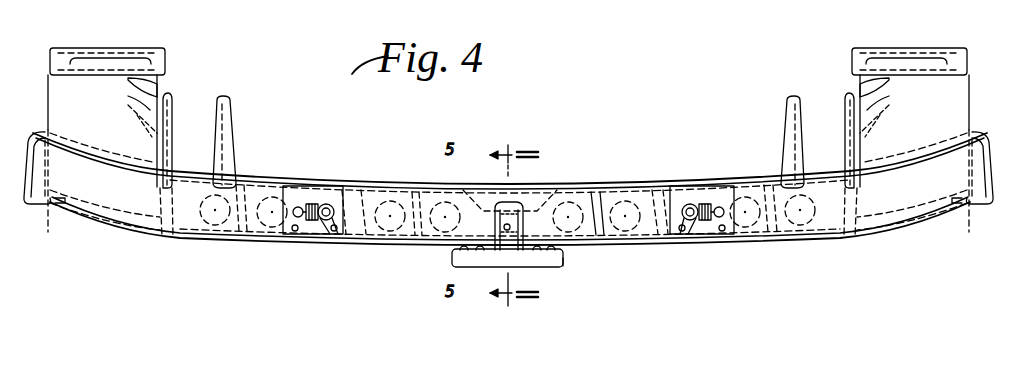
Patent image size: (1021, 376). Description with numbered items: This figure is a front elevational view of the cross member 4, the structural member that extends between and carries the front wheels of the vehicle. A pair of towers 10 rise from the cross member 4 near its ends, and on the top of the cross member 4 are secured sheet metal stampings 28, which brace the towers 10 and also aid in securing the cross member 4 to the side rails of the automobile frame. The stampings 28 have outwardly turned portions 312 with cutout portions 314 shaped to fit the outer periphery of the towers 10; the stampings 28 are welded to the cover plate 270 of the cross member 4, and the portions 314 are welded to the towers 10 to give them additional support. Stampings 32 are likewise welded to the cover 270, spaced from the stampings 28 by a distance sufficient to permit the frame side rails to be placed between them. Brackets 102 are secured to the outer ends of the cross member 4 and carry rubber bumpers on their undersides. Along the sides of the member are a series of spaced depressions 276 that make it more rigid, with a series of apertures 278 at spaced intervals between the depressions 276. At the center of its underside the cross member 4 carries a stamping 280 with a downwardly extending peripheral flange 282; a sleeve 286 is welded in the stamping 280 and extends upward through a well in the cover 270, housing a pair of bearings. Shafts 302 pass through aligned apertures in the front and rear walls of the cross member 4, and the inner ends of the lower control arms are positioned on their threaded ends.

The cross member 4 is at (510, 212).
The towers 10 is at (157, 82).
The sheet metal stampings 28 is at (168, 97).
The stampings 32 is at (227, 143).
The brackets 102 is at (24, 200).
The cover plate 270 is at (723, 176).
The spaced depressions 276 is at (601, 191).
The apertures 278 is at (654, 189).
The stamping 280 is at (564, 259).
The peripheral flange 282 is at (562, 266).
The sleeve 286 is at (520, 206).
The shafts 302 is at (306, 224).
The outwardly turned portions 312 is at (130, 79).
The cutout portions 314 is at (157, 117).